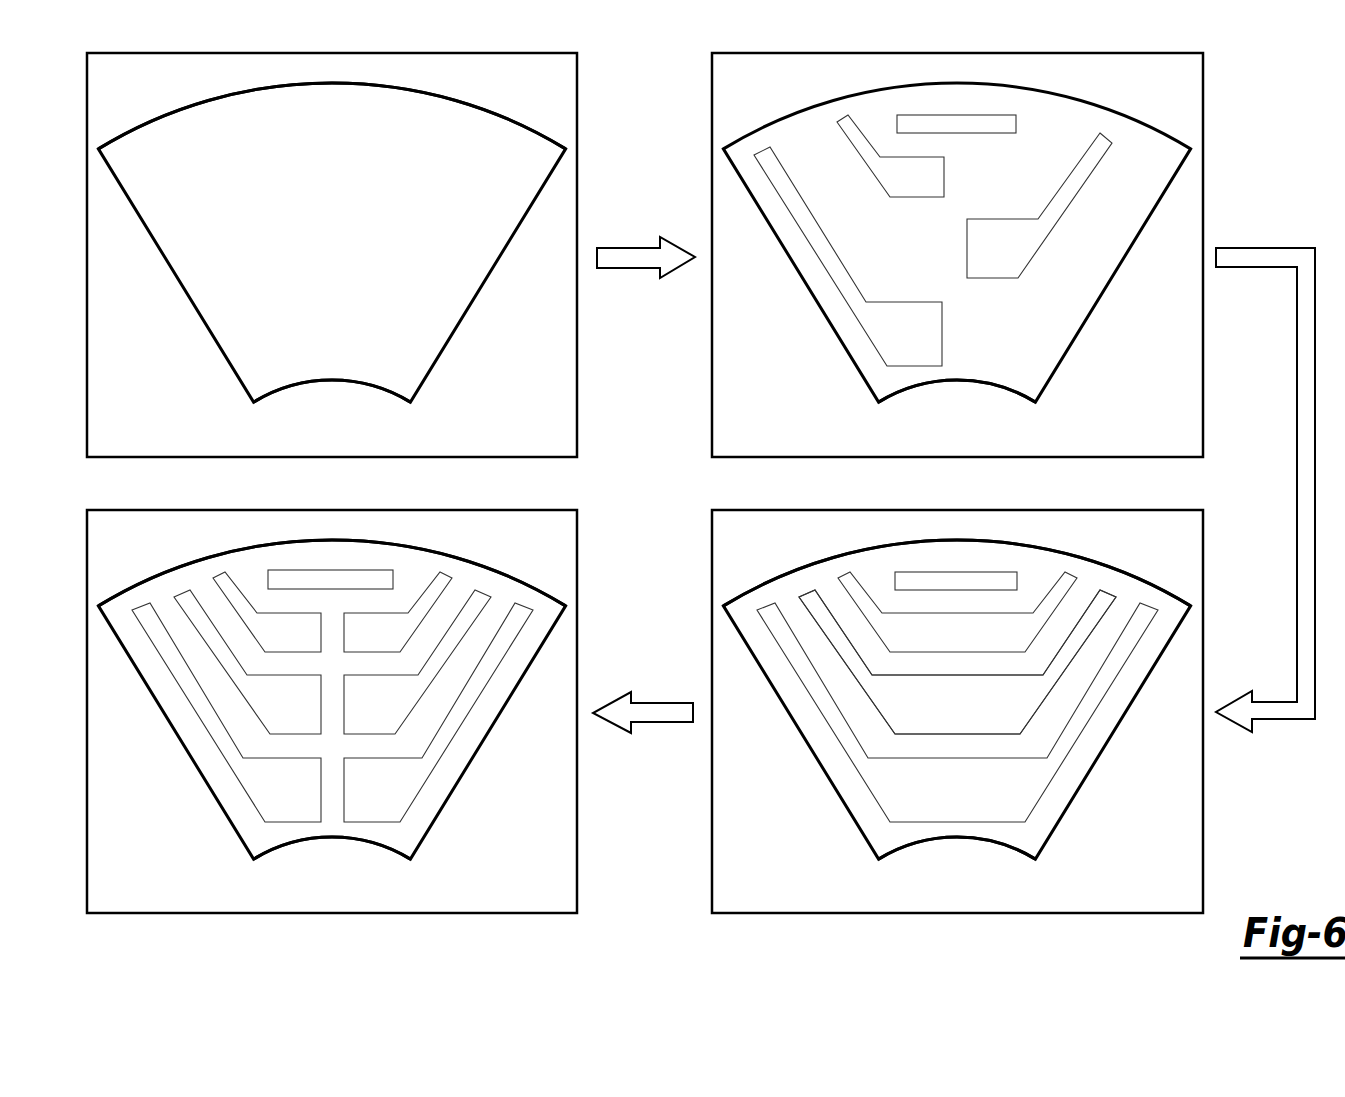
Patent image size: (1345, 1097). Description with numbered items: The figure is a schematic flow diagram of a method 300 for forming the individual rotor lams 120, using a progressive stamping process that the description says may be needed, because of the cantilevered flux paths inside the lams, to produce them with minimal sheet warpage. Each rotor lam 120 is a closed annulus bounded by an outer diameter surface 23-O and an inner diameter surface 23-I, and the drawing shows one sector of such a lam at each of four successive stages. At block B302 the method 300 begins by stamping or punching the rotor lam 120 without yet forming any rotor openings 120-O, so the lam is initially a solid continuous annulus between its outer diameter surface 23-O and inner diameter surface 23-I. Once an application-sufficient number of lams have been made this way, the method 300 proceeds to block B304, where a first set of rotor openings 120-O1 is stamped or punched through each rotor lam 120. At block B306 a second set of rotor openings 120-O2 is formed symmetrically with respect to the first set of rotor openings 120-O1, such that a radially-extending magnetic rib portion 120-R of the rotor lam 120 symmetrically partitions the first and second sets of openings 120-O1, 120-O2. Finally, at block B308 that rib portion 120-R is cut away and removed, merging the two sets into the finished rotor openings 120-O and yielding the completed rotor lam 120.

The rotor lam 120 is at (347, 228).
The outer diameter surface 23-O is at (190, 107).
The inner diameter surface 23-I is at (332, 381).
The first set of rotor openings 120-O1 is at (938, 125).
The second set of rotor openings 120-O2 is at (290, 712).
The rotor openings 120-O is at (952, 585).
The magnetic rib portion 120-R is at (946, 715).
The block B302 is at (332, 255).
The block B304 is at (957, 255).
The block B306 is at (332, 711).
The block B308 is at (957, 711).
The method 300 is at (1273, 135).